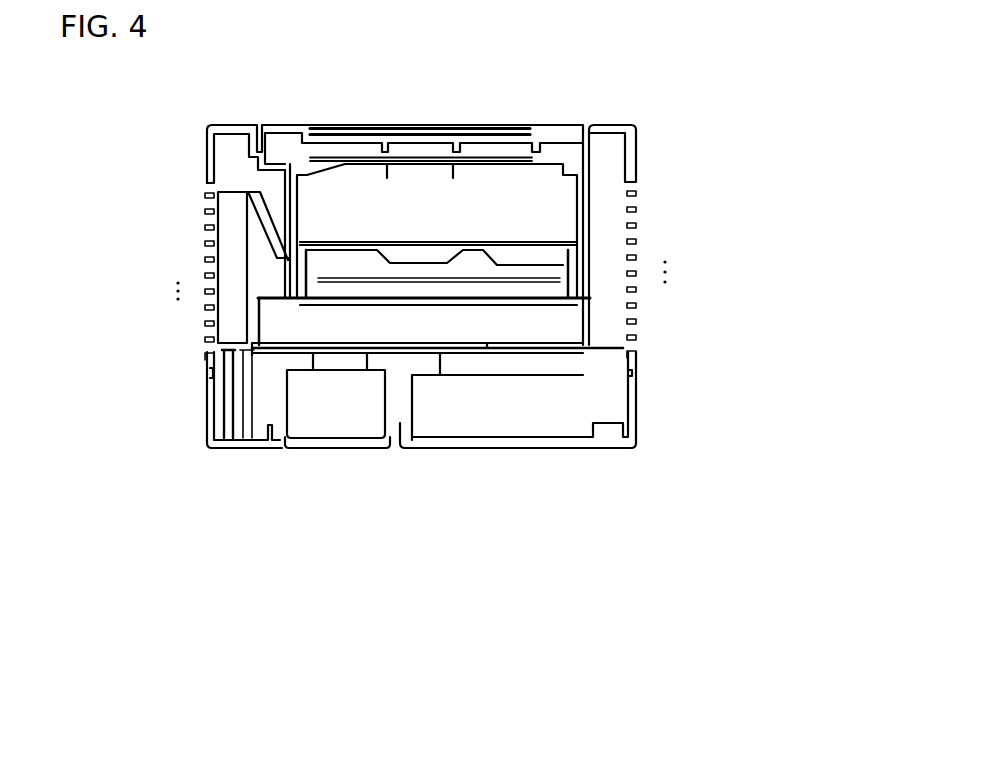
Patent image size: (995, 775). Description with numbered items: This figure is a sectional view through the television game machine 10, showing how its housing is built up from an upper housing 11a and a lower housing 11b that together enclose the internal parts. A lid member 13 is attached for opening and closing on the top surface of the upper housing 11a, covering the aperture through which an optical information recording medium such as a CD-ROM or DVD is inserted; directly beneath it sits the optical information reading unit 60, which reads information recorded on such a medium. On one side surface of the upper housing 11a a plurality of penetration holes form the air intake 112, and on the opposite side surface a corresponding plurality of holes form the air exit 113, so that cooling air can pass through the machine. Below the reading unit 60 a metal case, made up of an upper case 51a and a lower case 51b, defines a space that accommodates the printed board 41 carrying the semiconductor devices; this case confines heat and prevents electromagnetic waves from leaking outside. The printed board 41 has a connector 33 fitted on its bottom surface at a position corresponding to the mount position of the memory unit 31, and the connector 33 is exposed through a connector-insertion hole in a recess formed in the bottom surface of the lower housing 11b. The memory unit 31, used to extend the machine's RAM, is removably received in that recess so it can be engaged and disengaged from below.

The television game machine 10 is at (518, 70).
The upper housing 11a is at (633, 162).
The lower housing 11b is at (635, 422).
The lid member 13 is at (545, 127).
The optical information reading unit 60 is at (538, 220).
The upper case 51a is at (588, 338).
The lower case 51b is at (517, 377).
The air intake 112 is at (645, 242).
The air exit 113 is at (199, 258).
The connector 33 is at (330, 363).
The memory unit 31 is at (330, 447).
The printed board 41 is at (440, 377).